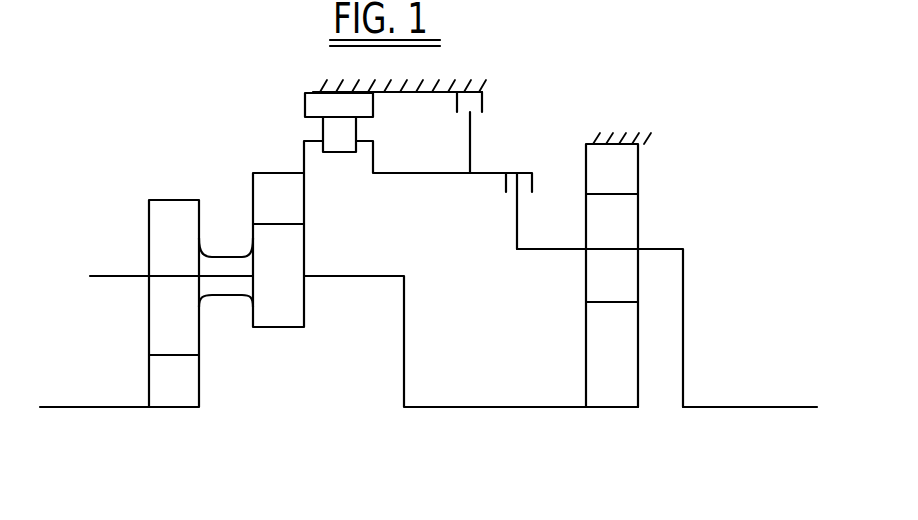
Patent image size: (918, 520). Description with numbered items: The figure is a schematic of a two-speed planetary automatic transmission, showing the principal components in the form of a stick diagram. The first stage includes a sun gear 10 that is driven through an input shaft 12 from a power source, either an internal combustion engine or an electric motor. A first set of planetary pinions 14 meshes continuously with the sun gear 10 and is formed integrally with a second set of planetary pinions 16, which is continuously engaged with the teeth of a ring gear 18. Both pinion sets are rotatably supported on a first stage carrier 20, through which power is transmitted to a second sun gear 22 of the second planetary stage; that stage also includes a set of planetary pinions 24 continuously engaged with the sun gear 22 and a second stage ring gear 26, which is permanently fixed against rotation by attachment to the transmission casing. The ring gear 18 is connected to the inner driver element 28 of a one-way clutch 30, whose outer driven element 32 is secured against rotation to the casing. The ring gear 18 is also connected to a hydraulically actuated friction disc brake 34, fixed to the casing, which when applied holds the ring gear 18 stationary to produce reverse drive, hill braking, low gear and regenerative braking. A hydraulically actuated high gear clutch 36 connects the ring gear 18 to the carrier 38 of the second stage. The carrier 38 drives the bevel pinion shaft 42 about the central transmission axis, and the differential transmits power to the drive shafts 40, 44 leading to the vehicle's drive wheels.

The sun gear 10 is at (199, 407).
The input shaft 12 is at (110, 407).
The first set of planetary pinions 14 is at (165, 200).
The second set of planetary pinions 16 is at (305, 325).
The ring gear 18 is at (254, 173).
The first stage carrier 20 is at (313, 272).
The second sun gear 22 is at (607, 406).
The planetary pinions 24 is at (637, 210).
The second stage ring gear 26 is at (637, 162).
The inner driver element 28 is at (366, 158).
The one-way clutch 30 is at (293, 89).
The outer driven element 32 is at (331, 103).
The friction disc brake 34 is at (482, 92).
The high gear clutch 36 is at (511, 168).
The carrier 38 is at (557, 250).
The drive shaft 40 is at (700, 407).
The bevel pinion shaft 42 is at (683, 320).
The drive shaft 44 is at (701, 408).